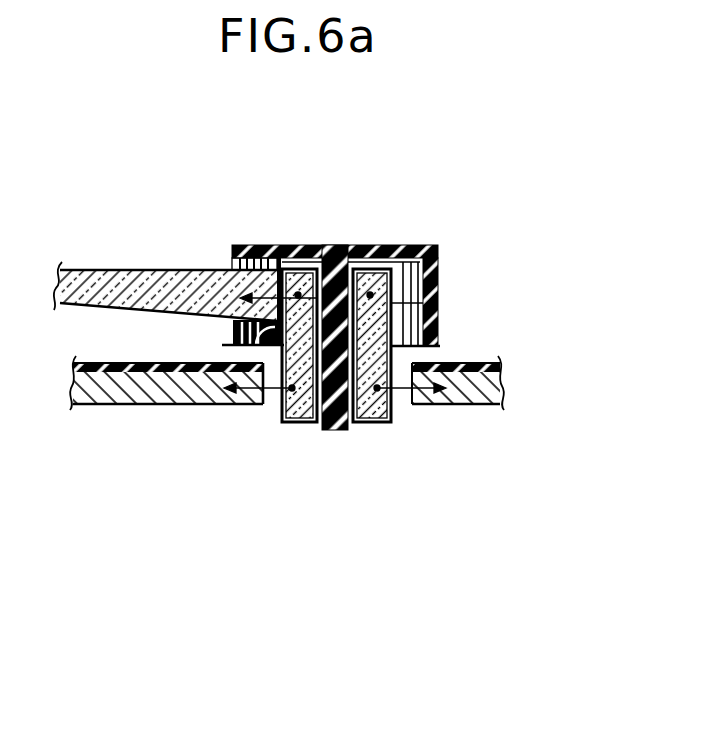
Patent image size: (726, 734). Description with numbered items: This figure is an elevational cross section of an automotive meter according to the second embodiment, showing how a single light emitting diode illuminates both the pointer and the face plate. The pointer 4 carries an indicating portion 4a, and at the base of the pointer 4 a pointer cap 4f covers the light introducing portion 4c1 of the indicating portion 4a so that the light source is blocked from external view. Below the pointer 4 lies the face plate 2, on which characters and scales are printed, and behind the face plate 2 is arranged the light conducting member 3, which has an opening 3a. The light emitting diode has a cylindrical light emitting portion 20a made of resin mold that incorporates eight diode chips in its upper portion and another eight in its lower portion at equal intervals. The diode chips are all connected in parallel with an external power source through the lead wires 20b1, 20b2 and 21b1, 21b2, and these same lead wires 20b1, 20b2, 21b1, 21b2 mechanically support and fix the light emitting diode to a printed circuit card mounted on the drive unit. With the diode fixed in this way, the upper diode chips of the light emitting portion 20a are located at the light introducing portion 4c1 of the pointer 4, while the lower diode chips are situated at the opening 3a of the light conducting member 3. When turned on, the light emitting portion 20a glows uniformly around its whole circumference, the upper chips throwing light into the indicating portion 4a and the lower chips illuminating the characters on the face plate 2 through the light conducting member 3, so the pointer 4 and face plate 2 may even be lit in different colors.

The face plate 2 is at (105, 363).
The light conducting member 3 is at (105, 407).
The opening 3a is at (270, 410).
The pointer 4 is at (226, 221).
The indicating portion 4a is at (118, 270).
The light introducing portion 4c1 is at (278, 262).
The pointer cap 4f is at (430, 247).
The light emitting portion 20a is at (371, 292).
The lead wire 20b1 is at (306, 416).
The lead wire 20b2 is at (364, 421).
The lead wire 21b1 is at (283, 411).
The lead wire 21b2 is at (392, 411).